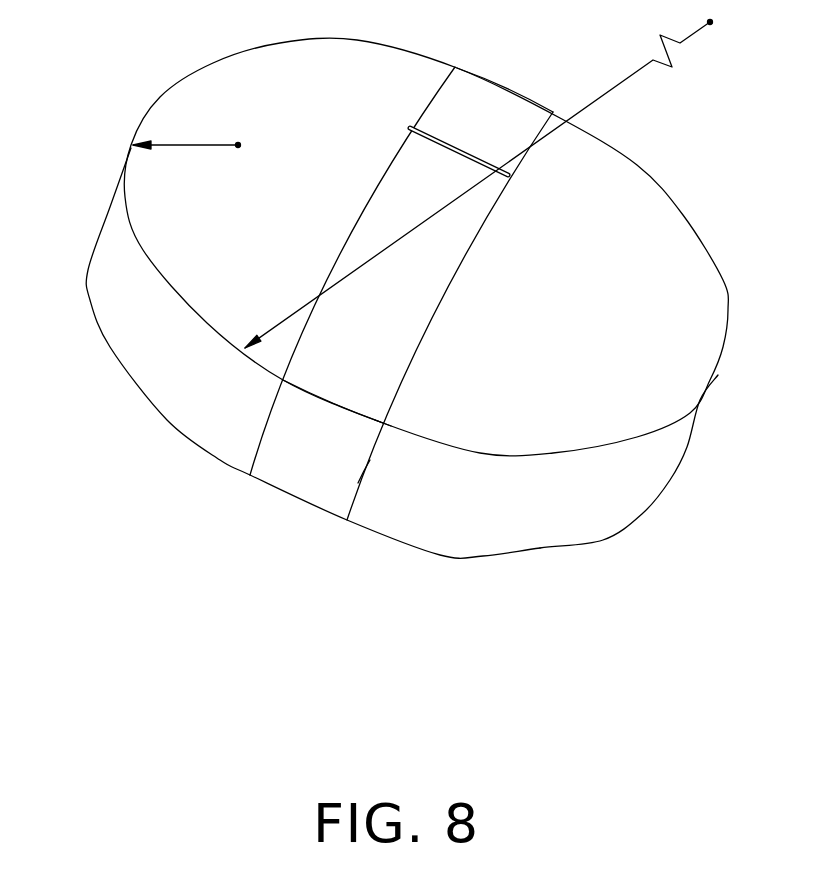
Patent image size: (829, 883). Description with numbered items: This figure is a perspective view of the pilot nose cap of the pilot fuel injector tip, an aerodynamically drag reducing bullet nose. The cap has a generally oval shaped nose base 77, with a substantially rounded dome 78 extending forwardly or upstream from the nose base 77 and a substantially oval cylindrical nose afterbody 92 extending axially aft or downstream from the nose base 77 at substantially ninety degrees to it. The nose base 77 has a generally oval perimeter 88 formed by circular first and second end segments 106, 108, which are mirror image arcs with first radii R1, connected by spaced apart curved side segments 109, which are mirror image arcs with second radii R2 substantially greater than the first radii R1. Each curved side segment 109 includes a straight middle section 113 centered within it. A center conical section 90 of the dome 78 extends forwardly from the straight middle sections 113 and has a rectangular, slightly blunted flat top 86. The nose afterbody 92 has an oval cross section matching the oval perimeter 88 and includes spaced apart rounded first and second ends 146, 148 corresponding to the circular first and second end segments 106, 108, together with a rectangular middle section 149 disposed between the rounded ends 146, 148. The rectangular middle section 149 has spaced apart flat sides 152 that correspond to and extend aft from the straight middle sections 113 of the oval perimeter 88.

The circular first end segment 106 is at (160, 97).
The rounded first end 146 is at (107, 210).
The rounded second end 148 is at (665, 445).
The nose afterbody 92 is at (483, 535).
The flat sides 152 is at (470, 70).
The straight middle section 113 is at (512, 90).
The flat top 86 is at (448, 140).
The center conical section 90 is at (417, 311).
The oval perimeter 88 is at (387, 423).
The rectangular middle section 149 is at (363, 472).
The curved side segments 109 is at (207, 325).
The rounded dome 78 is at (688, 250).
The circular second end segment 108 is at (700, 390).
The nose base 77 is at (683, 393).
The first radii R1 is at (188, 148).
The second radii R2 is at (398, 243).